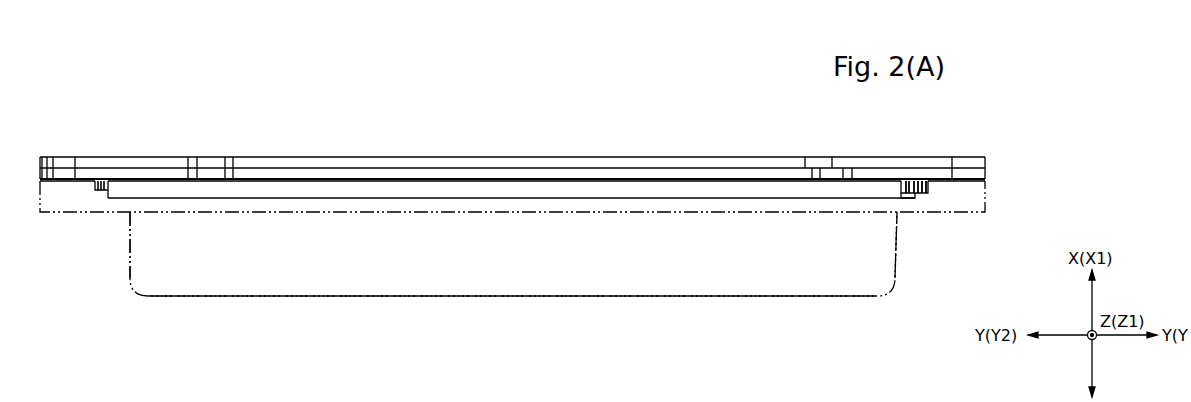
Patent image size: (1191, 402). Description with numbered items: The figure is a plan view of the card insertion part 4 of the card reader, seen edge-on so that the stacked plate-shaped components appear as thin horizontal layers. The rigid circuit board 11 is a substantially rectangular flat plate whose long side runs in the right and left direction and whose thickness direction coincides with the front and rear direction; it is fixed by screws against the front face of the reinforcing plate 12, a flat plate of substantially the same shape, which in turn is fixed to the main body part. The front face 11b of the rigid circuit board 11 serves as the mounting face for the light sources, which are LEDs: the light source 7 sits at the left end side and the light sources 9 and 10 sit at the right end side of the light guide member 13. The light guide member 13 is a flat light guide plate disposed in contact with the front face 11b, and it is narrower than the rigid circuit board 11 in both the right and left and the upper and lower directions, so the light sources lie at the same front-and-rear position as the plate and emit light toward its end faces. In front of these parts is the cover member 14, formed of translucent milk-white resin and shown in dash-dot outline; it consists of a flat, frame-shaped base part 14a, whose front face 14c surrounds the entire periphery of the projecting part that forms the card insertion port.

The card insertion part 4 is at (1023, 143).
The reinforcing plate 12 is at (130, 156).
The rigid circuit board 11 is at (375, 167).
The front face of the rigid circuit board 11b is at (328, 180).
The light guide member 13 is at (582, 199).
The light source 7 is at (95, 185).
The light source 9 is at (928, 186).
The light source 10 is at (907, 194).
The cover member 14 is at (472, 290).
The base part 14a is at (78, 212).
The front face of the base part 14c is at (896, 245).